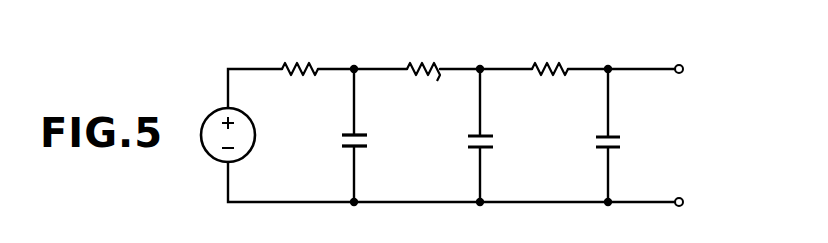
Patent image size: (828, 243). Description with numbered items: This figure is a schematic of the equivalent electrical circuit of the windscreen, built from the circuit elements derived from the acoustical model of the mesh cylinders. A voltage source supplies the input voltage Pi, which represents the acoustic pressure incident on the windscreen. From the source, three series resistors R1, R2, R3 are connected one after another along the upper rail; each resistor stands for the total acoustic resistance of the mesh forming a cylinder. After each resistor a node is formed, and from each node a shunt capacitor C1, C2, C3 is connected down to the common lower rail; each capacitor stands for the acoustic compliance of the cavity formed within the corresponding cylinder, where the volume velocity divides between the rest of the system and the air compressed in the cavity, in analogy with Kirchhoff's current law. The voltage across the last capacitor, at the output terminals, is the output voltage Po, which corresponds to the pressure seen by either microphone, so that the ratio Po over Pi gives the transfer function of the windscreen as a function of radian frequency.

The acoustic resistance R1 is at (300, 53).
The acoustic resistance R2 is at (423, 56).
The acoustic resistance R3 is at (550, 53).
The acoustic compliance C1 is at (368, 135).
The acoustic compliance C2 is at (494, 135).
The acoustic compliance C3 is at (622, 135).
The input voltage Pi is at (215, 140).
The output voltage Po is at (684, 135).